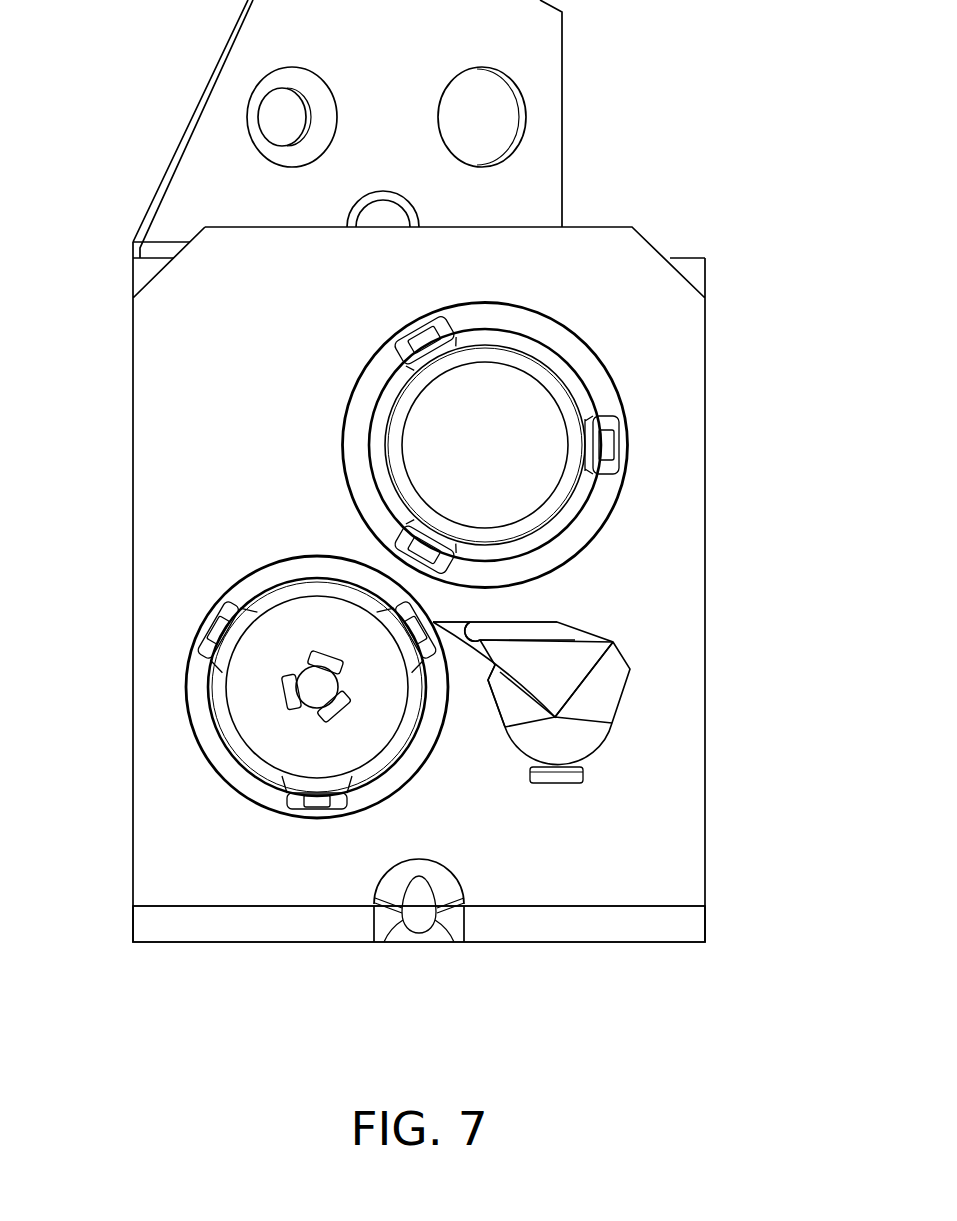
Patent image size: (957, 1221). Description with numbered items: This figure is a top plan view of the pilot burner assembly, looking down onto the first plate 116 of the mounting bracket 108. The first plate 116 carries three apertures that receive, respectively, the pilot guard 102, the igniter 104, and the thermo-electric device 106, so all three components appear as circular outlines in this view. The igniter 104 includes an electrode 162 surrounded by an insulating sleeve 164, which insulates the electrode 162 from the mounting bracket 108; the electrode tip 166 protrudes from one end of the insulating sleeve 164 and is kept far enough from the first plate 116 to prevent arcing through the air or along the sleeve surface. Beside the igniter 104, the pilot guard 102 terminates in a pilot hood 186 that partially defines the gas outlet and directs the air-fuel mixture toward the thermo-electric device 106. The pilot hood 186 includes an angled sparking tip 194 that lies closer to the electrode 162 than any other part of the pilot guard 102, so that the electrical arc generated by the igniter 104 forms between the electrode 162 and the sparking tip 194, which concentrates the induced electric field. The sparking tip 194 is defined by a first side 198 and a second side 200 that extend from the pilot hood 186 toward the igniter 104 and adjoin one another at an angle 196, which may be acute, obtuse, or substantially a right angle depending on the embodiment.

The pilot guard 102 is at (615, 723).
The igniter 104 is at (233, 725).
The thermo-electric device 106 is at (558, 400).
The mounting bracket 108 is at (207, 943).
The first plate 116 is at (213, 448).
The electrode 162 is at (303, 667).
The insulating sleeve 164 is at (355, 753).
The electrode tip 166 is at (313, 690).
The pilot hood 186 is at (593, 695).
The sparking tip 194 is at (437, 622).
The angle 196 is at (575, 640).
The first side 198 is at (475, 655).
The second side 200 is at (527, 622).